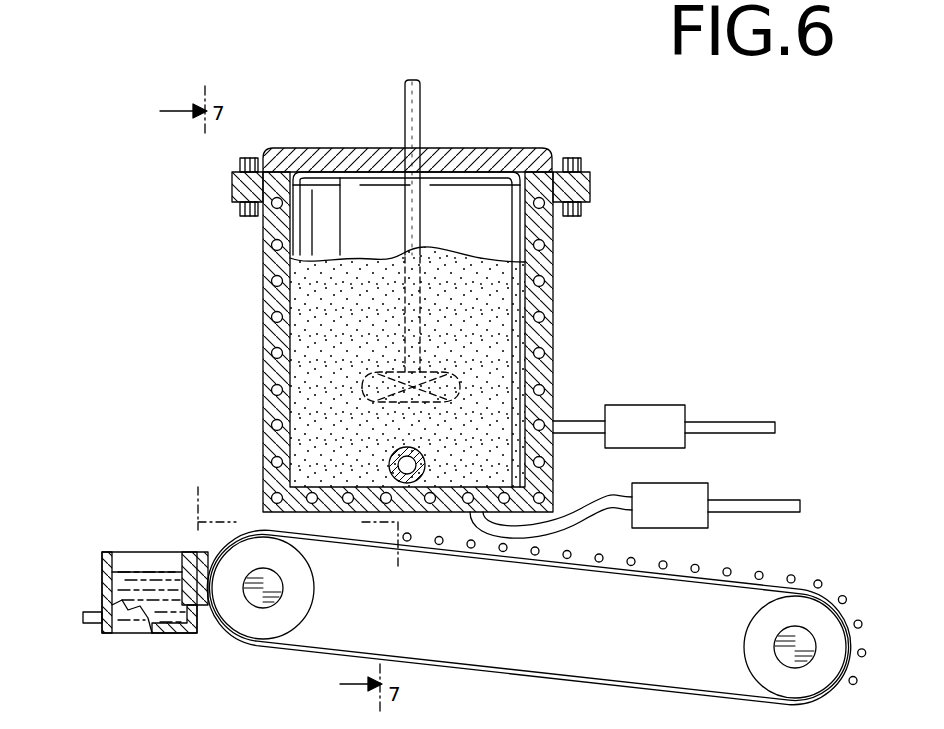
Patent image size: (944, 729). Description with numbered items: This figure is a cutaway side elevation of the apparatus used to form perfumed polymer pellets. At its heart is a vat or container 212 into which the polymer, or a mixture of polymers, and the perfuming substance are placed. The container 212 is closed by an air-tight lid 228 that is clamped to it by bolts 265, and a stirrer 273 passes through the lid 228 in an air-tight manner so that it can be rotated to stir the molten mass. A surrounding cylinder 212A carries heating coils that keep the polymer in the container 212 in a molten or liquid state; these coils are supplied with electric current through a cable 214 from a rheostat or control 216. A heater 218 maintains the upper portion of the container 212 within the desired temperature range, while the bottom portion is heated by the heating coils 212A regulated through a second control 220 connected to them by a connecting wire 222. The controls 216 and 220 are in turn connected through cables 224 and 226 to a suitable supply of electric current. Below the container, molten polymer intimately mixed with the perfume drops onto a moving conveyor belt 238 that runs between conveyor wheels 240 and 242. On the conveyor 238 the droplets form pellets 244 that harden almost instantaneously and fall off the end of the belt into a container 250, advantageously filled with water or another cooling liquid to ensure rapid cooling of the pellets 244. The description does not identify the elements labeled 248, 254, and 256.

The container 212 is at (248, 318).
The surrounding cylinder 212A is at (556, 272).
The cable 214 is at (578, 424).
The control 216 is at (646, 418).
The heater 218 is at (390, 458).
The control 220 is at (664, 496).
The connecting wire 222 is at (605, 504).
The cable 224 is at (717, 424).
The cable 226 is at (745, 503).
The lid 228 is at (470, 160).
The conveyor belt 238 is at (549, 679).
The conveyor wheel 240 is at (306, 608).
The conveyor wheel 242 is at (748, 650).
The pellets 244 is at (818, 582).
The reservoir 248 is at (90, 560).
The container 250 is at (170, 634).
The liquid level in reservoir 254 is at (133, 570).
The wiper / applicator block 256 is at (202, 566).
The bolts 265 is at (240, 212).
The stirrer 273 is at (420, 218).